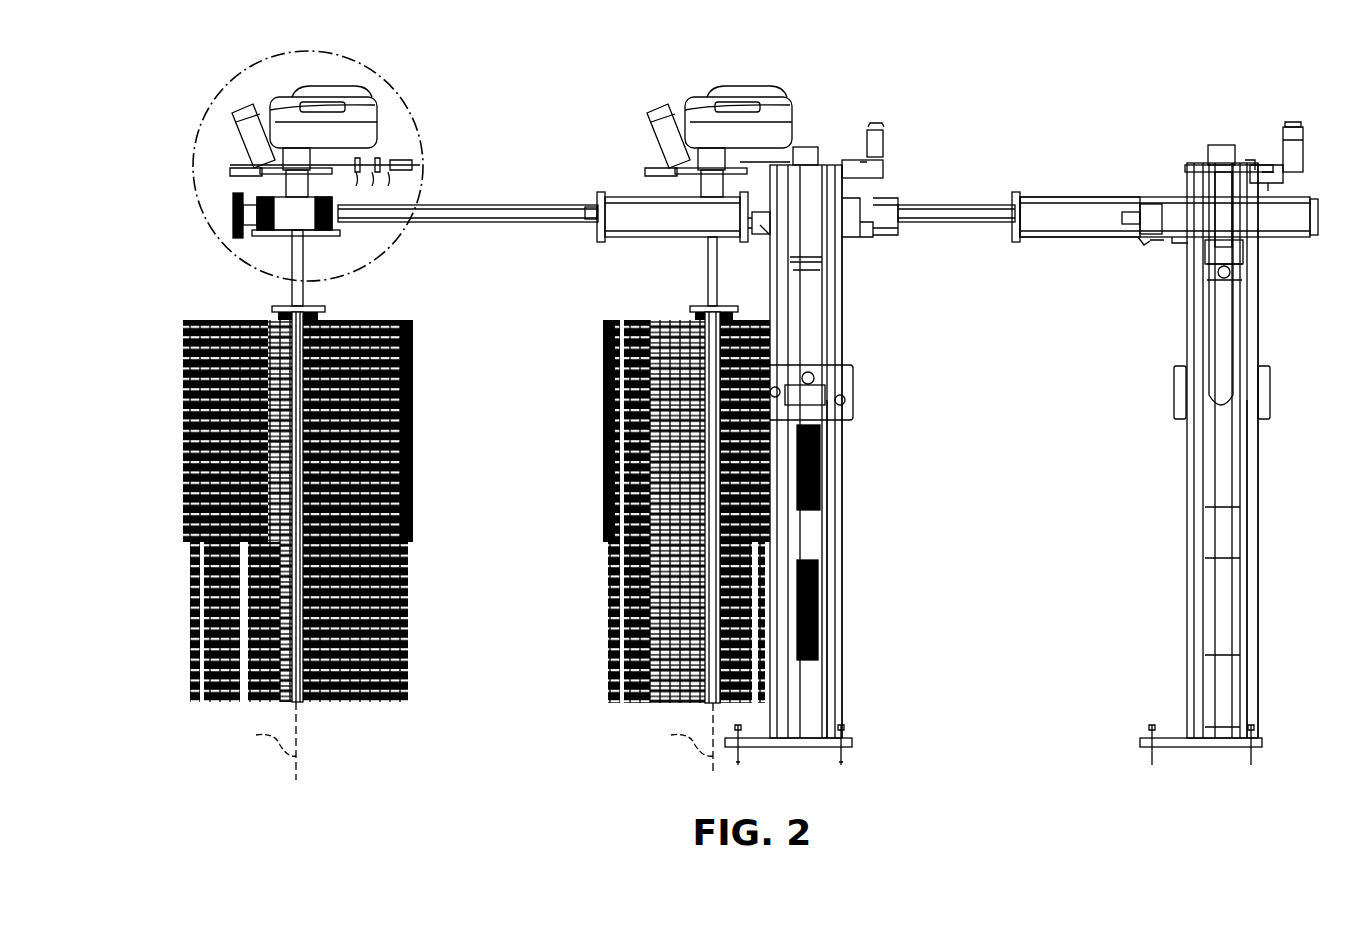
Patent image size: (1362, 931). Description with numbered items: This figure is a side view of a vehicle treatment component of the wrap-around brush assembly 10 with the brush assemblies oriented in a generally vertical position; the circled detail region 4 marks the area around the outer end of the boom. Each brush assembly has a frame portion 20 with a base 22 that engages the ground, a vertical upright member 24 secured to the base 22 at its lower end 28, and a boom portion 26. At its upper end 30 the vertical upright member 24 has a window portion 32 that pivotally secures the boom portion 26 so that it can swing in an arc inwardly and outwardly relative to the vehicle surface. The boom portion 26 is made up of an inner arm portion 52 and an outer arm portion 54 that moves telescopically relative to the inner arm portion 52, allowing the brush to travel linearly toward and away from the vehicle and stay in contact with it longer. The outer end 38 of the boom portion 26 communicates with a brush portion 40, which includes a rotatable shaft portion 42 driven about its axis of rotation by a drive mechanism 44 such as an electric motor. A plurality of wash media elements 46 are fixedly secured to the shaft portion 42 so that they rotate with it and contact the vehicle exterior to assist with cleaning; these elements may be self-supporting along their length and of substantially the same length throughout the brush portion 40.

The detail circle 4 is at (238, 76).
The wrap-around brush assembly 10 is at (1026, 92).
The frame portion 20 is at (855, 522).
The base 22 is at (818, 748).
The vertical upright member 24 is at (845, 630).
The boom portion 26 is at (1052, 206).
The lower end 28 is at (832, 718).
The upper end 30 is at (1246, 165).
The window portion 32 is at (1228, 240).
The outer end 38 is at (350, 212).
The brush portion 40 is at (413, 473).
The rotatable shaft portion 42 is at (304, 258).
The drive mechanism 44 is at (362, 118).
The wash media elements 46 is at (412, 410).
The inner arm portion 52 is at (627, 200).
The outer arm portion 54 is at (502, 212).